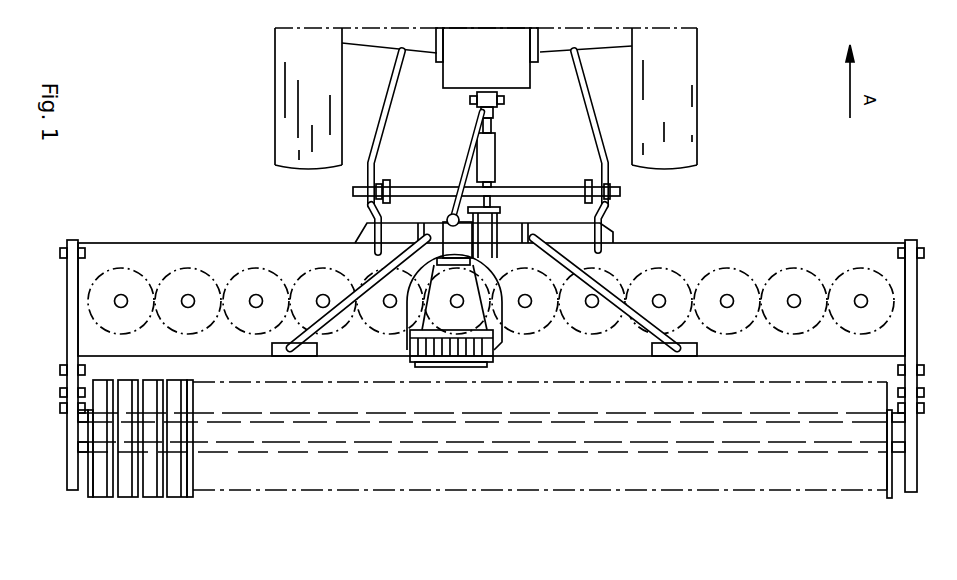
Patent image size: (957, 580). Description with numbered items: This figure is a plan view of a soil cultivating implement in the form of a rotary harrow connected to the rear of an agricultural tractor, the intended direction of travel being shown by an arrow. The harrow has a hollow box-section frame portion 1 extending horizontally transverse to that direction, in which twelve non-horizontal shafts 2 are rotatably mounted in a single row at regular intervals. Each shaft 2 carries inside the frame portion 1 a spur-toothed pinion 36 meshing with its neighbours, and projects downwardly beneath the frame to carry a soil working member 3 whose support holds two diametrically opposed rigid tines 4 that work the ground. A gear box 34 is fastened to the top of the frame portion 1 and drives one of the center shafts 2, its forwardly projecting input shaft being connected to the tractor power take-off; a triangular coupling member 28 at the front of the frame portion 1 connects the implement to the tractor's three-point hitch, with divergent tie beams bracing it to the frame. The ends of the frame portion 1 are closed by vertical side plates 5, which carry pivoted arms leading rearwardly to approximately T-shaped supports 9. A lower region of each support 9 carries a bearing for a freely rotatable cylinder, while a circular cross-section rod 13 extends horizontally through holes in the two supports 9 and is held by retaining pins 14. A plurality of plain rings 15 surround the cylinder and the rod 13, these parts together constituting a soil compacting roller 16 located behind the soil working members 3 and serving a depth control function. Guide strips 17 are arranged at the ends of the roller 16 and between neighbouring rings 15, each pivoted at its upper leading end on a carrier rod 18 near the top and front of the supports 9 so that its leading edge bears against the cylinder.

The hollow box-section frame portion 1 is at (187, 250).
The non-horizontal shafts 2 is at (258, 298).
The soil working member 3 is at (471, 232).
The rigid tines 4 is at (64, 368).
The side plates 5 is at (80, 321).
The support 9 is at (64, 305).
The rod 13 is at (67, 452).
The retaining pins 14 is at (126, 490).
The plain rings 15 is at (75, 490).
The soil compacting roller 16 is at (150, 490).
The strips 17 is at (103, 490).
The carrier rod 18 is at (67, 418).
The hitch bar 28 is at (558, 232).
The gear box 34 is at (460, 318).
The pinion 36 is at (232, 273).